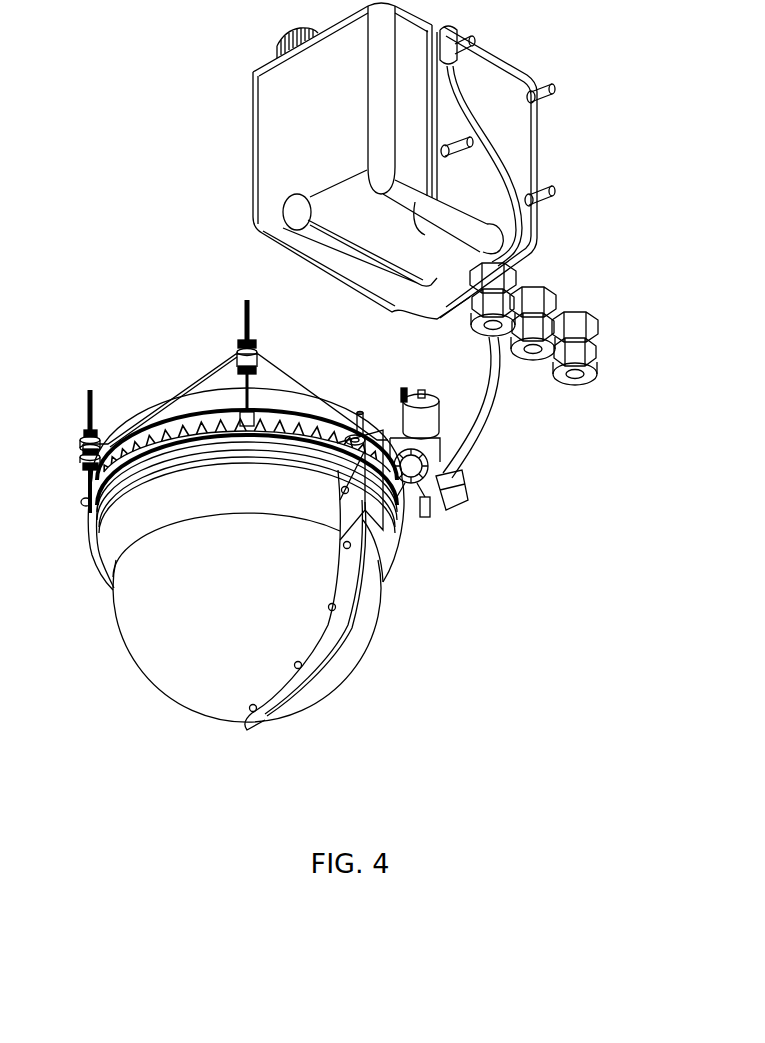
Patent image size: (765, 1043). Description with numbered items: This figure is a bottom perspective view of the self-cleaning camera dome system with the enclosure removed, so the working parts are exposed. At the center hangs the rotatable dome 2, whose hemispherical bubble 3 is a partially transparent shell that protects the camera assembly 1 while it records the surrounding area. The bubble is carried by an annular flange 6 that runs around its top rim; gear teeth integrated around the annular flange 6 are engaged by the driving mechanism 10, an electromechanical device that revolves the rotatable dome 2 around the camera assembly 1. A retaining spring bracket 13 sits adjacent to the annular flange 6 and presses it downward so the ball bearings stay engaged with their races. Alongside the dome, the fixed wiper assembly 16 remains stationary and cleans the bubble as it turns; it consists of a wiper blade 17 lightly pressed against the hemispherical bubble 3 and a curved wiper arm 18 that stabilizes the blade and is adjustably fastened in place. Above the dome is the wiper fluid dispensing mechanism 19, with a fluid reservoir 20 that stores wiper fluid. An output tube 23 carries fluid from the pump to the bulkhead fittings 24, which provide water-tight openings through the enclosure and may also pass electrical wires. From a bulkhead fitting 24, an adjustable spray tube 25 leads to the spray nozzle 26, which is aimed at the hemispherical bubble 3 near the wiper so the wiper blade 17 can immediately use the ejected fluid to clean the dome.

The camera assembly 1 is at (163, 409).
The rotatable dome 2 is at (132, 681).
The hemispherical bubble 3 is at (249, 615).
The annular flange 6 is at (216, 421).
The driving mechanism 10 is at (398, 386).
The retaining spring bracket 13 is at (86, 503).
The fixed wiper assembly 16 is at (303, 617).
The wiper blade 17 is at (270, 683).
The wiper arm 18 is at (255, 728).
The wiper fluid dispensing mechanism 19 is at (588, 220).
The fluid reservoir 20 is at (268, 131).
The output tube 23 is at (480, 137).
The bulkhead fitting 24 is at (475, 318).
The adjustable spray tube 25 is at (484, 418).
The spray nozzle 26 is at (457, 497).